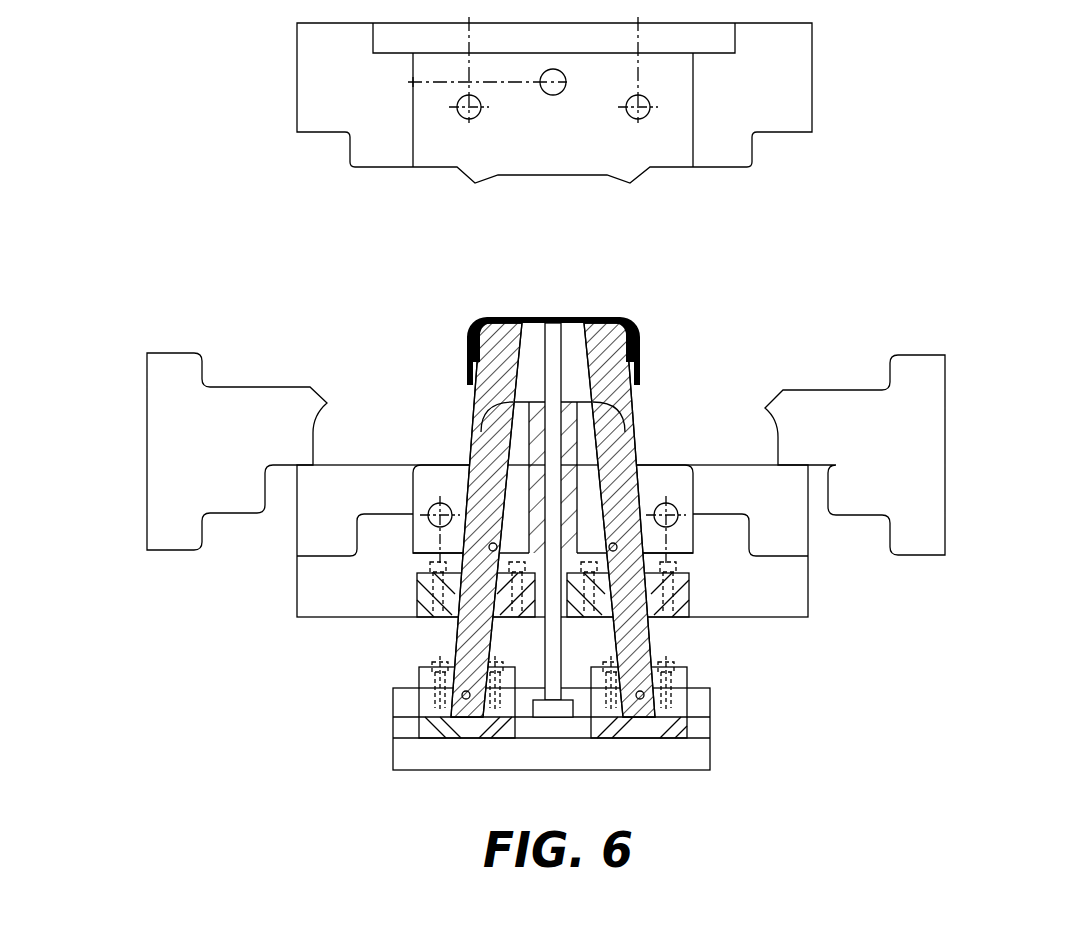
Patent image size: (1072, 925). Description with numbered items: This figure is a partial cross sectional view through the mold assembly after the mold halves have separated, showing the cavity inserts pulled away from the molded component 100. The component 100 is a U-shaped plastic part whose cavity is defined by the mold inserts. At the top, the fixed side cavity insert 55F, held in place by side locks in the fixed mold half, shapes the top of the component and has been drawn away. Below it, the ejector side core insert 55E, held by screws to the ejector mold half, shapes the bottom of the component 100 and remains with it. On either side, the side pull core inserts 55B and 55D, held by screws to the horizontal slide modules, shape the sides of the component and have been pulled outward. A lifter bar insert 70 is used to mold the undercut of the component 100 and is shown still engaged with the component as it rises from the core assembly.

The side pull core insert 55B is at (202, 455).
The side pull core insert 55D is at (923, 448).
The ejector side core insert 55E is at (775, 583).
The fixed side cavity insert 55F is at (797, 81).
The lifter bar insert 70 is at (455, 635).
The molded component 100 is at (640, 362).